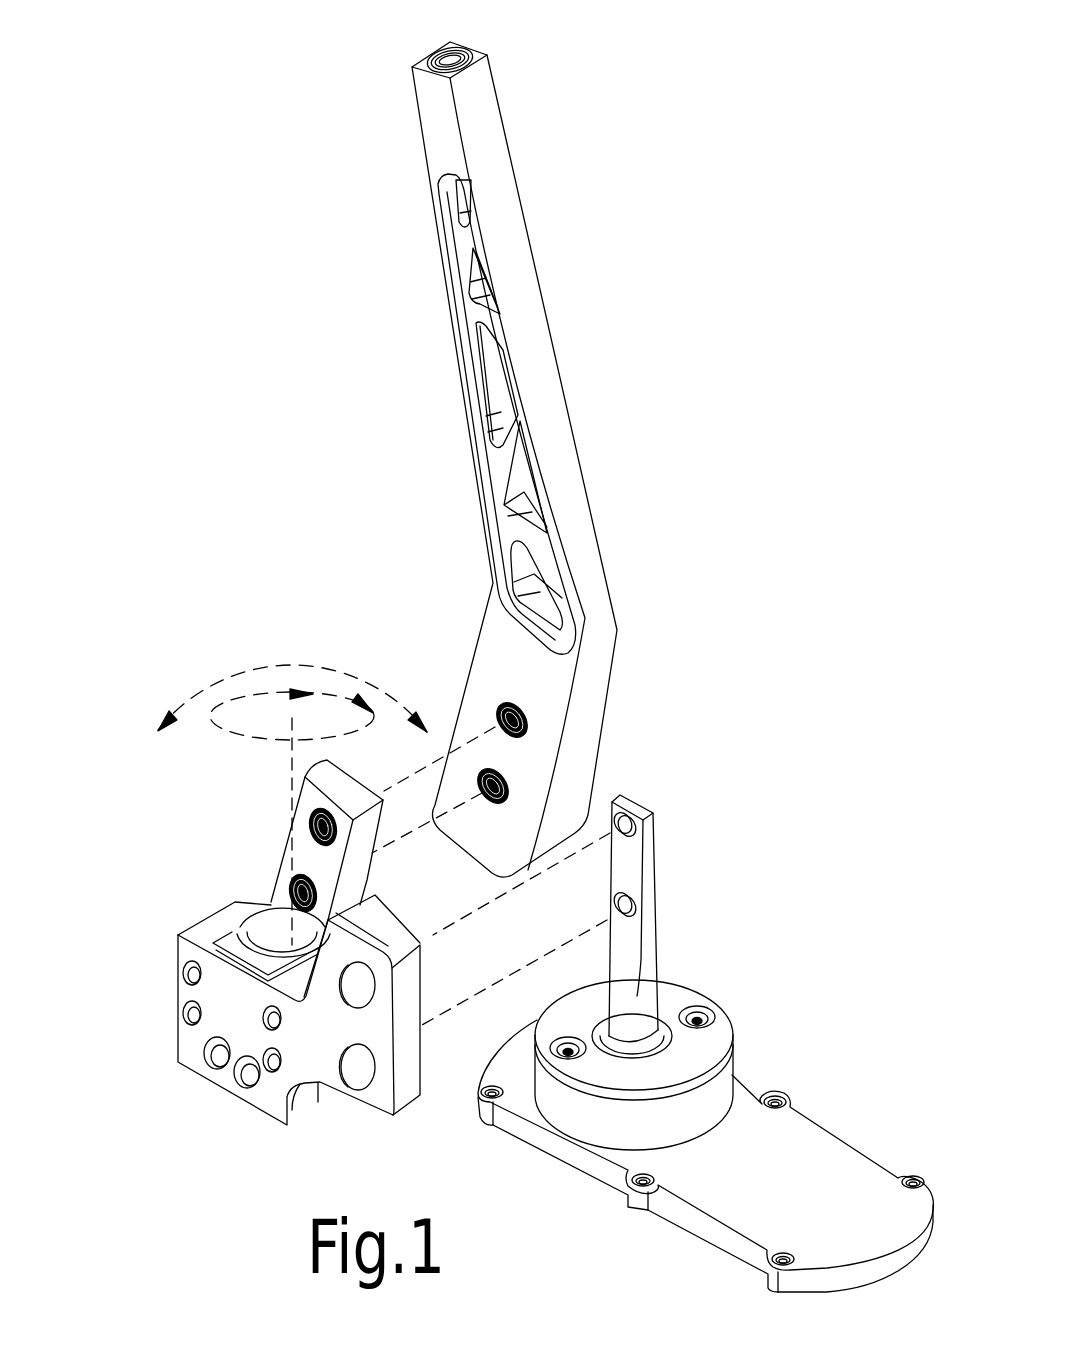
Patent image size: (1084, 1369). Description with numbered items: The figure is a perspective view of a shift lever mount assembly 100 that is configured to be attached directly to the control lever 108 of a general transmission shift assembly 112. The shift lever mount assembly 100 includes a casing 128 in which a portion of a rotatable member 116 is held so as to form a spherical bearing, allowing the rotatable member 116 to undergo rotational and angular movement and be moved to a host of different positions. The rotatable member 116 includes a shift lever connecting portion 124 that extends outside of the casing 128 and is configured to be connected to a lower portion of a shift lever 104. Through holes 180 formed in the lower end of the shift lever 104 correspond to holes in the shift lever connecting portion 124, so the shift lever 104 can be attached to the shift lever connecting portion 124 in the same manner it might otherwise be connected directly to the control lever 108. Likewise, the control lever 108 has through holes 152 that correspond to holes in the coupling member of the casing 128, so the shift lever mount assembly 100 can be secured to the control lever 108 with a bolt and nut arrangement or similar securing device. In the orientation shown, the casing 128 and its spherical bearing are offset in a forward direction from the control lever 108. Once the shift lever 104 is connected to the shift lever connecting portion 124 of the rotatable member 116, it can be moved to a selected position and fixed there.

The shift lever mount assembly 100 is at (168, 992).
The shift lever 104 is at (567, 459).
The control lever 108 is at (717, 884).
The transmission shift assembly 112 is at (863, 1113).
The rotatable member 116 is at (265, 830).
The shift lever connecting portion 124 is at (290, 864).
The casing 128 is at (230, 907).
The through holes 152 is at (635, 827).
The through holes 180 is at (506, 772).